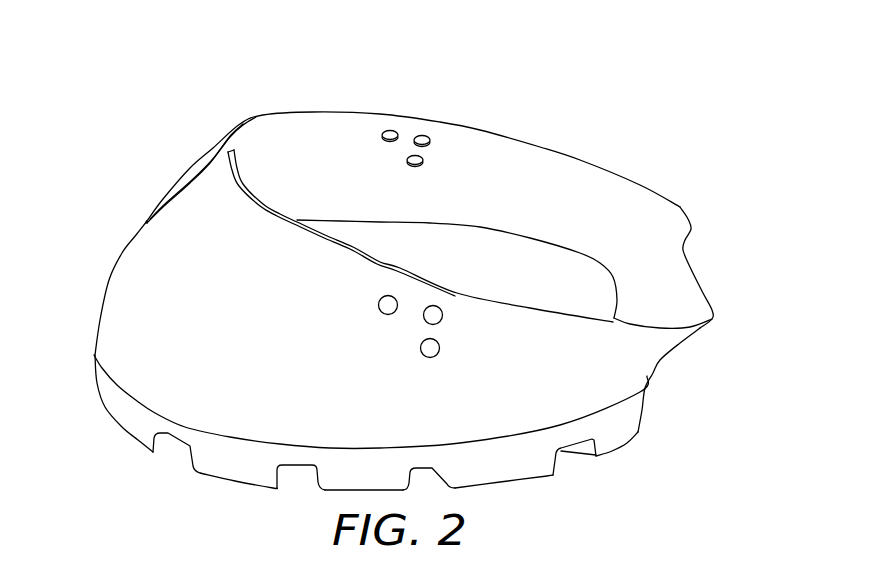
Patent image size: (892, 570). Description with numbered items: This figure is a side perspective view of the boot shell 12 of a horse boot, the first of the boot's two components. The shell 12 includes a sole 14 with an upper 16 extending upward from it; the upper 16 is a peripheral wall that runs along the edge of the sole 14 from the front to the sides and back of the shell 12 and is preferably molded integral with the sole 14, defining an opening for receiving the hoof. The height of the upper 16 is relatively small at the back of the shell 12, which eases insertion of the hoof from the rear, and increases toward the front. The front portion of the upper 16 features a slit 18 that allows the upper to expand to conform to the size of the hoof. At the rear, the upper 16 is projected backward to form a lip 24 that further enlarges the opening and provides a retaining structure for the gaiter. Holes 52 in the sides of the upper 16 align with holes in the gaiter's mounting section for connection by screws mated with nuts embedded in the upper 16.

The boot shell 12 is at (493, 84).
The sole 14 is at (611, 432).
The upper 16 is at (140, 257).
The slit 18 is at (189, 182).
The lip 24 is at (697, 275).
The holes 52 is at (407, 148).